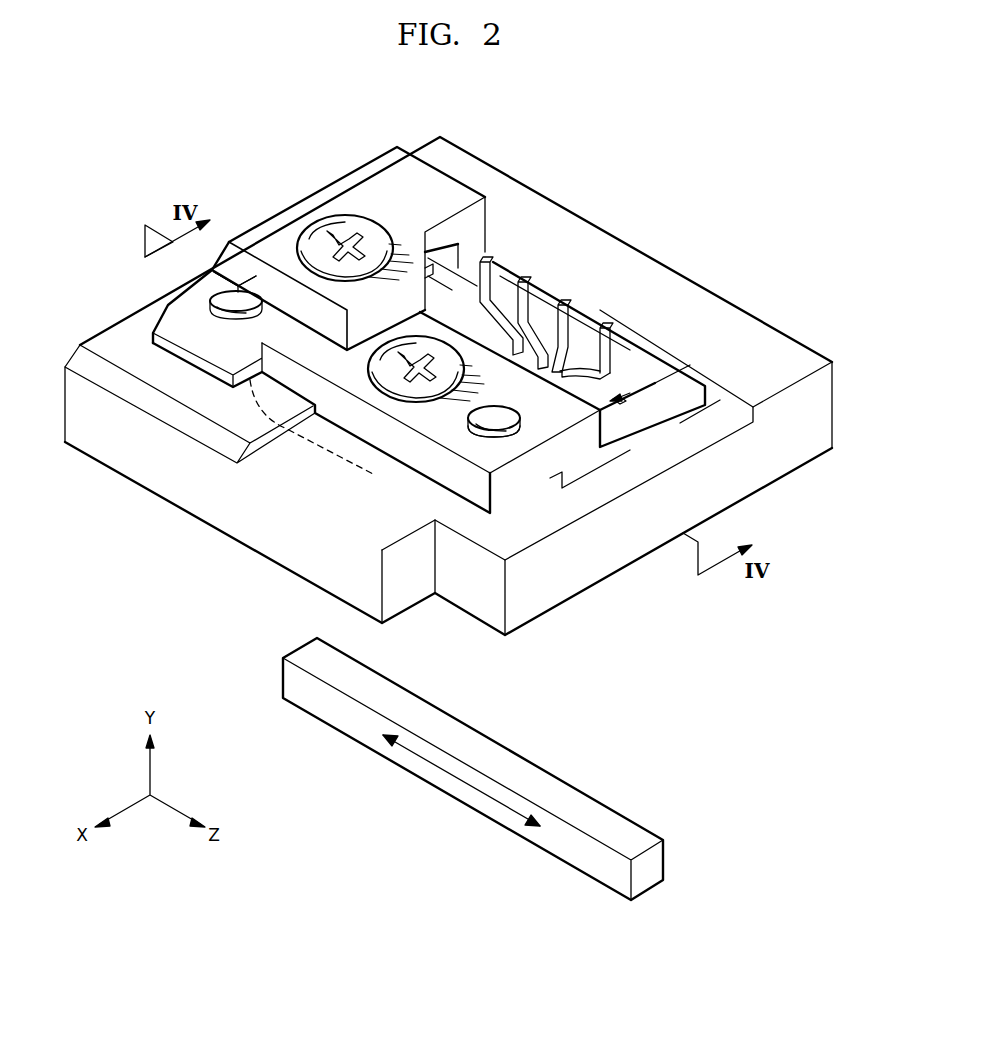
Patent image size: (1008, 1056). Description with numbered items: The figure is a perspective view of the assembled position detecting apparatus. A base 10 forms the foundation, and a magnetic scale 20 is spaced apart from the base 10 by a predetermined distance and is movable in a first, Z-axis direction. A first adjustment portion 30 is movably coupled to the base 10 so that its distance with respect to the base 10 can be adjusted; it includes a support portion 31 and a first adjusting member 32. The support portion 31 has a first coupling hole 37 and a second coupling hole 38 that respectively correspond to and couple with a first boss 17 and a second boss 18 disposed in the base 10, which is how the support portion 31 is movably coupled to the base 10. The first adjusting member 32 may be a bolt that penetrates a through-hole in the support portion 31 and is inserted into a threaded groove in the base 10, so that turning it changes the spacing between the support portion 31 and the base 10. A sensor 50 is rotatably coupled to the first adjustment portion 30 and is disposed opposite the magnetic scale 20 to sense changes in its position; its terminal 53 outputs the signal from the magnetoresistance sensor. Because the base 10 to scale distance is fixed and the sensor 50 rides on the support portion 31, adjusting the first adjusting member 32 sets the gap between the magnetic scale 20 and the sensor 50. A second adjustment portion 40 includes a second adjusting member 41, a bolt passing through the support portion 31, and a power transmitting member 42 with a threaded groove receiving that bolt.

The base 10 is at (108, 320).
The first boss 17 is at (236, 296).
The second boss 18 is at (487, 435).
The magnetic scale 20 is at (313, 702).
The first adjustment portion 30 is at (374, 459).
The support portion 31 is at (374, 447).
The first adjusting member 32 is at (392, 385).
The first coupling hole 37 is at (260, 332).
The second coupling hole 38 is at (508, 437).
The second adjustment portion 40 is at (348, 259).
The second adjusting member 41 is at (345, 218).
The power transmitting member 42 is at (293, 403).
The sensor 50 is at (631, 317).
The terminal 53 is at (562, 317).